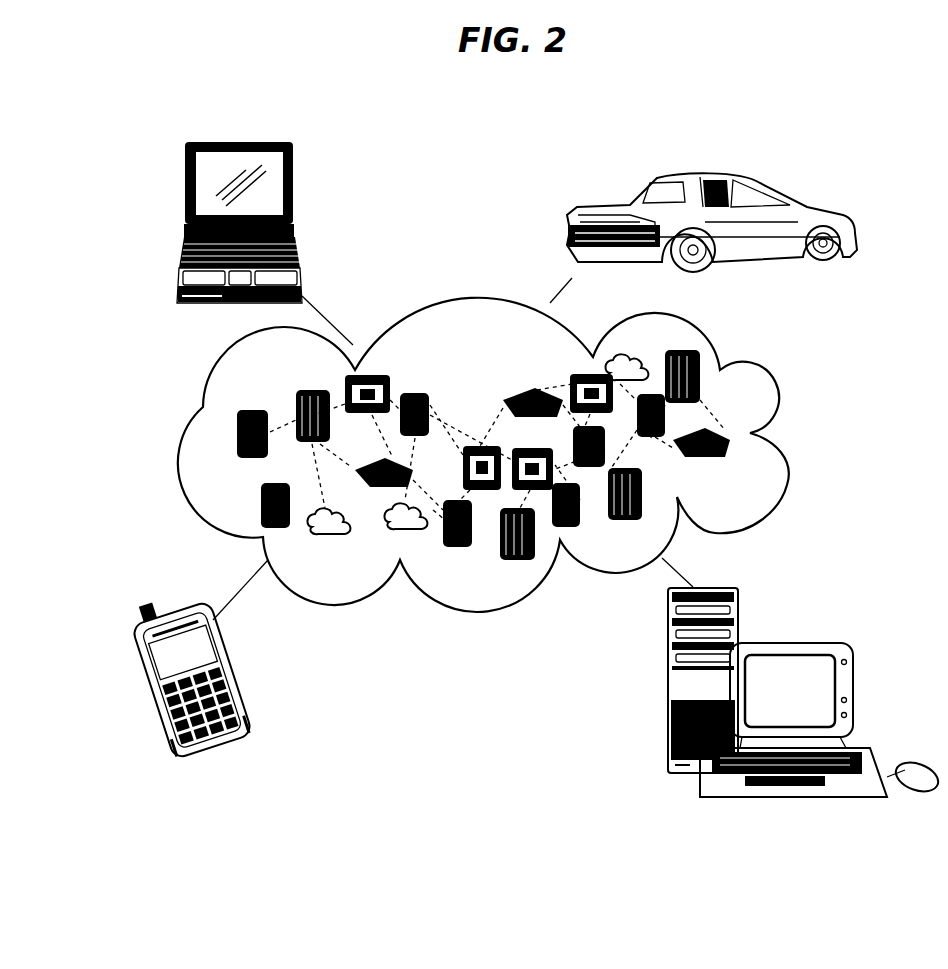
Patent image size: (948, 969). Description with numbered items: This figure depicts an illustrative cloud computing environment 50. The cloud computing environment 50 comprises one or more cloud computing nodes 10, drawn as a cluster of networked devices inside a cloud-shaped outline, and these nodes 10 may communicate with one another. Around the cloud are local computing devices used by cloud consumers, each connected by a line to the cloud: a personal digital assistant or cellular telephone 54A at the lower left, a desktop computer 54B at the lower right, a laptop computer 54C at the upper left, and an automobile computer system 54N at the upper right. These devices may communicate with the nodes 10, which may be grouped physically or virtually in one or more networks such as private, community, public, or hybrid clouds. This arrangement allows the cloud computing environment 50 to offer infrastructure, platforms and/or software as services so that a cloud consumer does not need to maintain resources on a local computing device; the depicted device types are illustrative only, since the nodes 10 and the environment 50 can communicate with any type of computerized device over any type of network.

The cloud computing nodes 10 is at (745, 481).
The cloud computing environment 50 is at (759, 385).
The personal digital assistant or cellular telephone 54A is at (146, 679).
The desktop computer 54B is at (803, 645).
The laptop computer 54C is at (210, 142).
The automobile computer system 54N is at (767, 183).